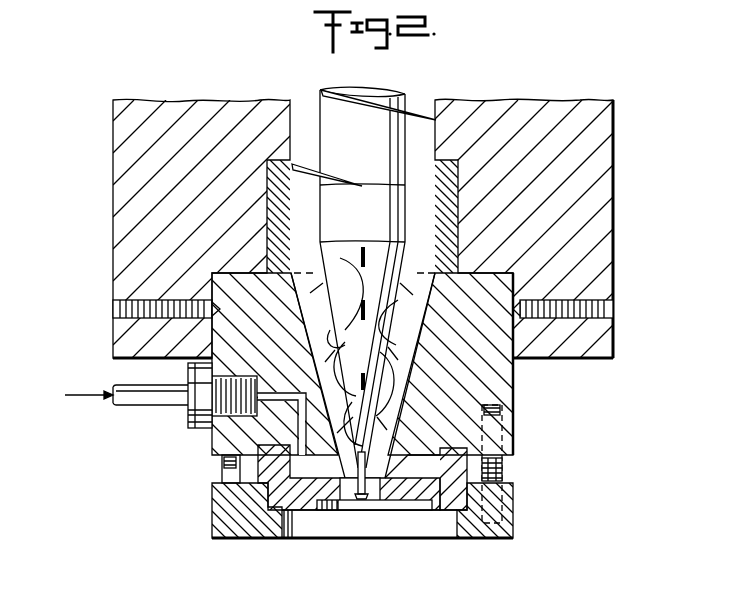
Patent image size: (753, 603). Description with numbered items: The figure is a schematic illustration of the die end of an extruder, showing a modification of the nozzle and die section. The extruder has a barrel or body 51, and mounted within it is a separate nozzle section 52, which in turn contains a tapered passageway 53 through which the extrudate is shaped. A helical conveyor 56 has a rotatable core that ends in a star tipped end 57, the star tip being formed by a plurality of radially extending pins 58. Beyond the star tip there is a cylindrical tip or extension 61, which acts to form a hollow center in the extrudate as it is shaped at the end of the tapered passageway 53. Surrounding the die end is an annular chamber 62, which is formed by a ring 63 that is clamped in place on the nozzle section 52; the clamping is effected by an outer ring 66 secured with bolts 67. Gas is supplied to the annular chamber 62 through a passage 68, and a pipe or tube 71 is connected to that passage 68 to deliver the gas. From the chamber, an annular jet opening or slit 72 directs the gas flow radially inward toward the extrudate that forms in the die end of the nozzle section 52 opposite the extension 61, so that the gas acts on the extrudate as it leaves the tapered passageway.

The barrel or body 51 is at (593, 163).
The nozzle section 52 is at (497, 389).
The tapered passageway 53 is at (414, 329).
The helical conveyor 56 is at (372, 97).
The star tipped end 57 is at (340, 250).
The radially extending pins 58 is at (361, 352).
The cylindrical tip or extension 61 is at (362, 506).
The annular chamber 62 is at (425, 470).
The ring 63 is at (429, 508).
The outer ring 66 is at (219, 505).
The bolts 67 is at (222, 462).
The passage 68 is at (282, 394).
The pipe or tube 71 is at (128, 407).
The annular jet opening or slit 72 is at (338, 508).